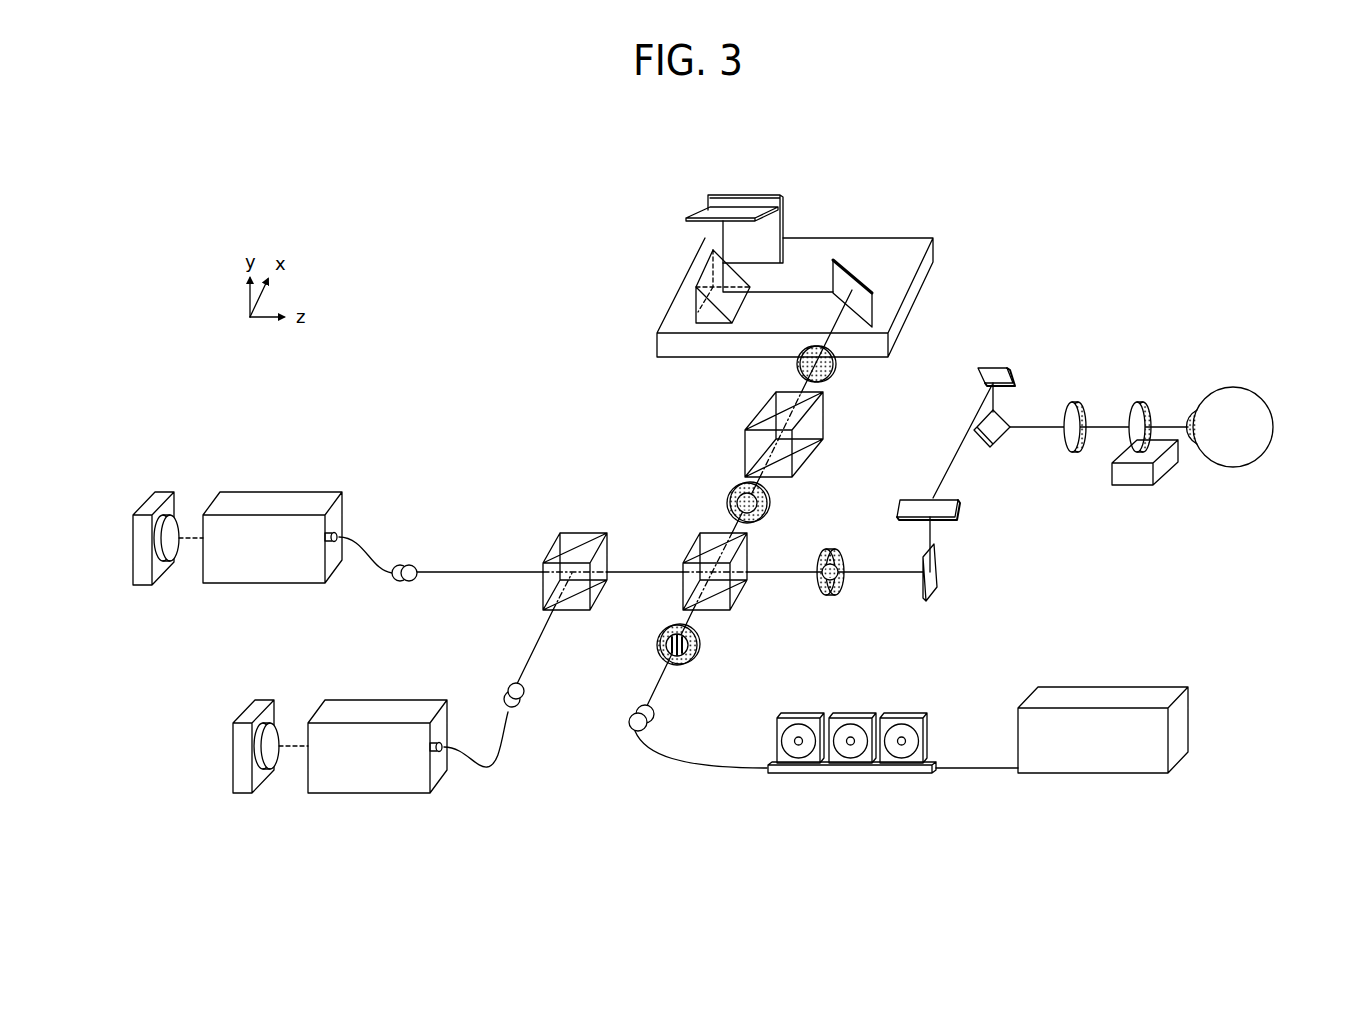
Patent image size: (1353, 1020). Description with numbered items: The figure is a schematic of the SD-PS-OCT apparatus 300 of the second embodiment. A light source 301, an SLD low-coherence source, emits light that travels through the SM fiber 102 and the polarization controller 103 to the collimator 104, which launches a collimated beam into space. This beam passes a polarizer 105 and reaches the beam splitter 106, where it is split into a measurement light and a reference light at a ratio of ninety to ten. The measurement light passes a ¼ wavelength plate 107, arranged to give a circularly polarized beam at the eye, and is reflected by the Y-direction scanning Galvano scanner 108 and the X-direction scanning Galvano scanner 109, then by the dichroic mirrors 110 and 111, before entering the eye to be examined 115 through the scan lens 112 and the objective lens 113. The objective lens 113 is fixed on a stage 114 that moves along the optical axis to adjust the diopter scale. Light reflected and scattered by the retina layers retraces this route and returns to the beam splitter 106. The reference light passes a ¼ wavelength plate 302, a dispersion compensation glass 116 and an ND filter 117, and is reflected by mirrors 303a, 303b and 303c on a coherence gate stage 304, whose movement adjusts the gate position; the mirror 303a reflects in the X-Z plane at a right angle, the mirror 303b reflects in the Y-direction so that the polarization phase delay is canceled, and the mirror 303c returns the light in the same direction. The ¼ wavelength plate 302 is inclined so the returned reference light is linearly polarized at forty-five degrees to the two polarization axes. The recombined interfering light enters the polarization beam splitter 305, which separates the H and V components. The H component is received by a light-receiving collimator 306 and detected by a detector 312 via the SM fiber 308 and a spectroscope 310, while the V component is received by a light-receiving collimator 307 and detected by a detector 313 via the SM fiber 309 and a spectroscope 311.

The SD-PS-OCT apparatus 300 is at (196, 194).
The light source 301 is at (1095, 775).
The ¼ wavelength plate 302 is at (727, 500).
The mirror 303a is at (873, 292).
The mirror 303b is at (696, 290).
The mirror 303c is at (687, 213).
The coherence gate stage 304 is at (657, 343).
The polarization beam splitter 305 is at (572, 532).
The light-receiving collimator 306 is at (410, 565).
The light-receiving collimator 307 is at (520, 710).
The SM fiber 308 is at (381, 538).
The SM fiber 309 is at (488, 770).
The spectroscope 310 is at (252, 500).
The spectroscope 311 is at (380, 710).
The detector 312 is at (160, 500).
The detector 313 is at (260, 710).
The SM fiber 102 is at (983, 770).
The polarization controller 103 is at (845, 774).
The collimator 104 is at (648, 724).
The polarizer 105 is at (697, 660).
The beam splitter 106 is at (713, 605).
The ¼ wavelength plate 107 is at (826, 597).
The Y-direction scanning Galvano scanner 108 is at (928, 602).
The X-direction scanning Galvano scanner 109 is at (920, 500).
The dichroic mirror 110 is at (993, 368).
The dichroic mirror 111 is at (997, 446).
The scan lens 112 is at (1075, 402).
The objective lens 113 is at (1140, 402).
The stage 114 is at (1133, 478).
The eye to be examined 115 is at (1208, 396).
The dispersion compensation glass 116 is at (800, 455).
The ND filter 117 is at (833, 376).